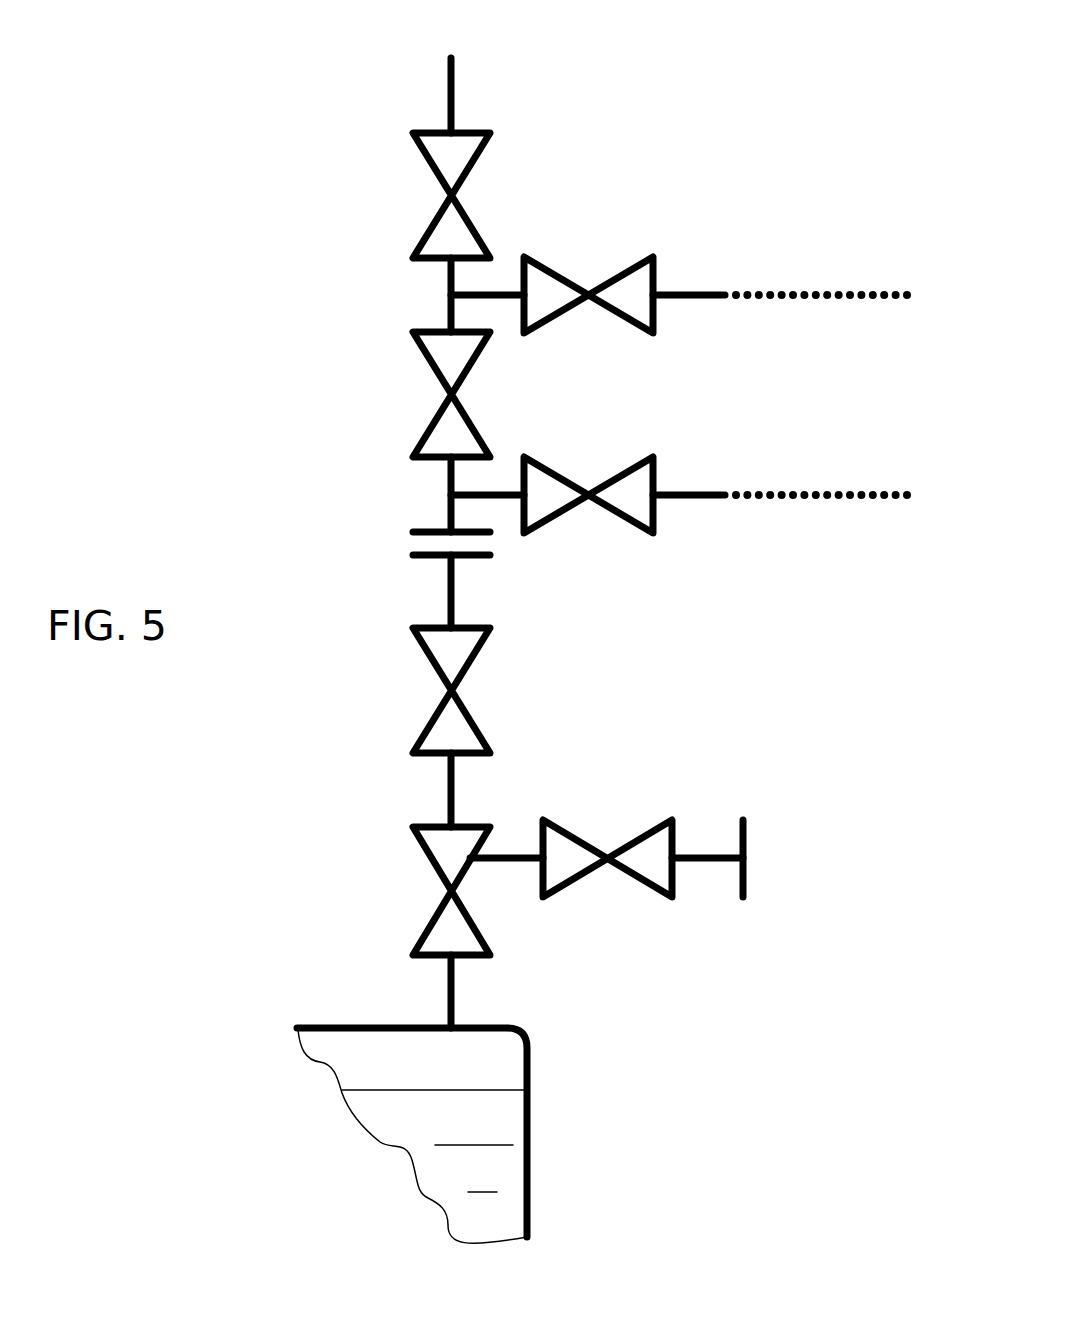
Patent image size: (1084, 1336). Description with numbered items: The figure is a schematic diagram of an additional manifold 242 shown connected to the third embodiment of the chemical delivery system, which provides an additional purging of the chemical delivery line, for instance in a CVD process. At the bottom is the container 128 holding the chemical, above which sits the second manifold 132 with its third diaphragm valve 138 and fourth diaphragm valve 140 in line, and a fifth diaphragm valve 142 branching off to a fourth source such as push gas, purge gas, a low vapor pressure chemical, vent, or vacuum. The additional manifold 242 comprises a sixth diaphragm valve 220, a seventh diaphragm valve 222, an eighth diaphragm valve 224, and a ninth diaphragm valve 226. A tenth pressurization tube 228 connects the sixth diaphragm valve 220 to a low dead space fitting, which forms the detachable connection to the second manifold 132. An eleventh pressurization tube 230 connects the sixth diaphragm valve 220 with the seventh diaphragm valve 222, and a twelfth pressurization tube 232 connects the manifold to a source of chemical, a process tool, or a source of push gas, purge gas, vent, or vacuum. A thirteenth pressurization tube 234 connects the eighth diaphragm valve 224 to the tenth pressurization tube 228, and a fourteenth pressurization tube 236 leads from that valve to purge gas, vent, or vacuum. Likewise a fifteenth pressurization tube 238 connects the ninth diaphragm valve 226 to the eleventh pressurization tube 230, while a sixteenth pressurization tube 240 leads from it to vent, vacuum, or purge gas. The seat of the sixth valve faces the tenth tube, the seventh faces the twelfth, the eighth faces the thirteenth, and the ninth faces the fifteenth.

The container 128 is at (511, 1130).
The second manifold 132 is at (728, 640).
The third diaphragm valve 138 is at (400, 891).
The fourth diaphragm valve 140 is at (389, 690).
The fifth diaphragm valve 142 is at (615, 799).
The sixth diaphragm valve 220 is at (521, 394).
The seventh diaphragm valve 222 is at (512, 195).
The eighth diaphragm valve 224 is at (647, 457).
The ninth diaphragm valve 226 is at (634, 261).
The tenth pressurization tube 228 is at (346, 494).
The eleventh pressurization tube 230 is at (353, 295).
The twelfth pressurization tube 232 is at (330, 101).
The thirteenth pressurization tube 234 is at (531, 549).
The fourteenth pressurization tube 236 is at (782, 531).
The fifteenth pressurization tube 238 is at (524, 336).
The sixteenth pressurization tube 240 is at (782, 256).
The additional manifold 242 is at (709, 106).